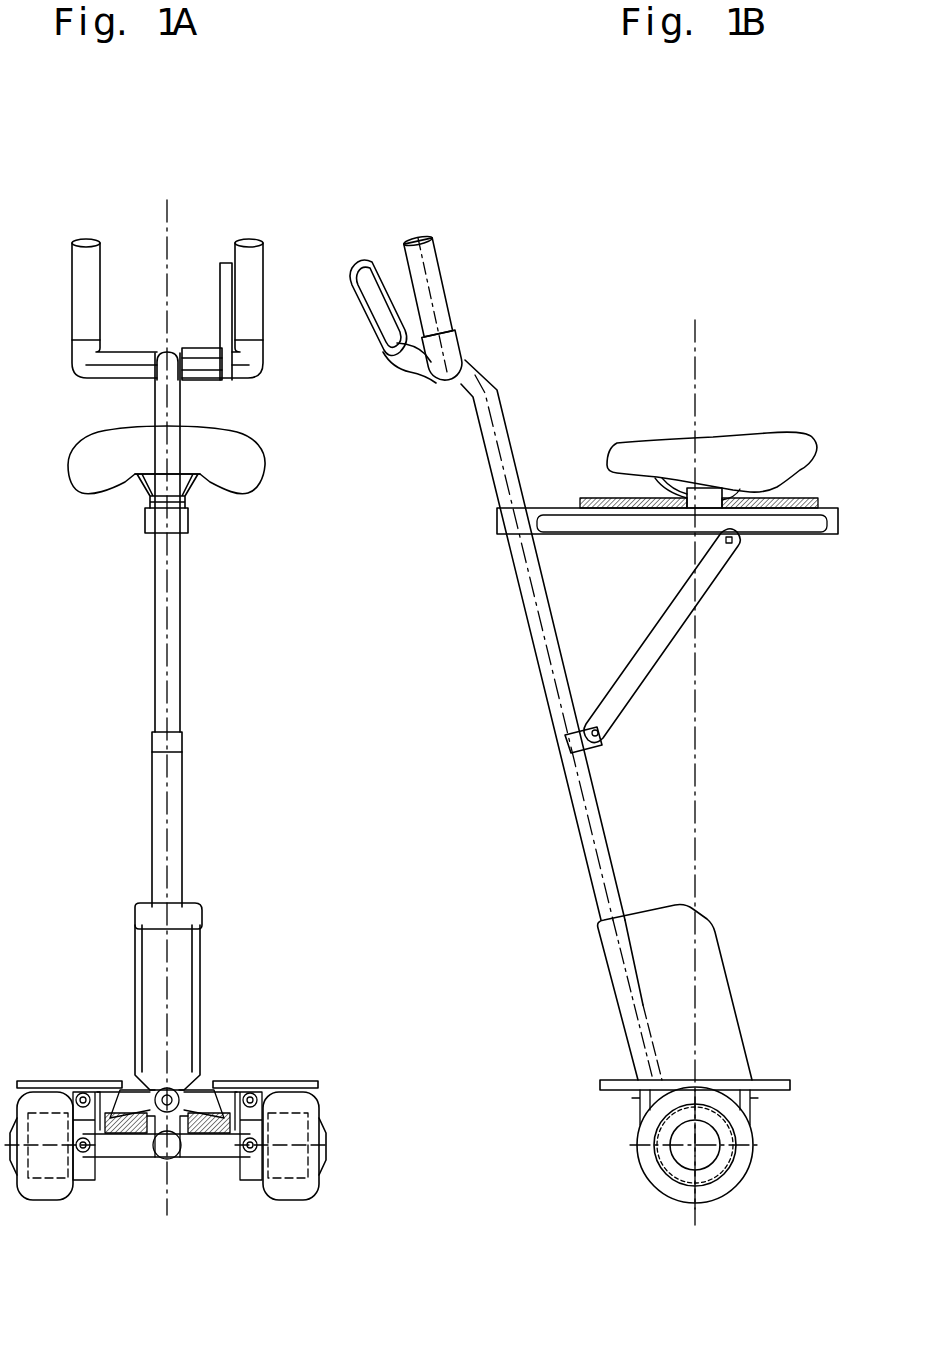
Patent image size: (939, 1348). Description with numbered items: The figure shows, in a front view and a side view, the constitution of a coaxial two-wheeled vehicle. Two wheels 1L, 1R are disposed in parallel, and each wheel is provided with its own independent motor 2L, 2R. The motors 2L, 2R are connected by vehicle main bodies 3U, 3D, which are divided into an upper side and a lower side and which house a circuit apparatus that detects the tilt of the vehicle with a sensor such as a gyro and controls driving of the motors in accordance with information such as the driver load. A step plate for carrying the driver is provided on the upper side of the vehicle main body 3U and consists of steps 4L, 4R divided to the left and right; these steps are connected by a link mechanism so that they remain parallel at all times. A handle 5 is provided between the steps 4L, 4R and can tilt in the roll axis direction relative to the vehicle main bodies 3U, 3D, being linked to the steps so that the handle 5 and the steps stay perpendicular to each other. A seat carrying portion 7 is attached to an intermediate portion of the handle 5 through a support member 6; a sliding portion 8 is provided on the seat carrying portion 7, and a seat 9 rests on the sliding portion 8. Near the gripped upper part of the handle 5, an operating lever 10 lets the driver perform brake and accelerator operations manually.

In FIG. 1A, the wheel 1L is at (300, 1182).
In FIG. 1B, the wheel 1L is at (740, 1168).
In FIG. 1A, the wheel 1R is at (35, 1180).
In FIG. 1A, the motor 2L is at (272, 1170).
In FIG. 1A, the motor 2R is at (47, 1165).
In FIG. 1A, the vehicle main body 3U is at (203, 1095).
In FIG. 1A, the vehicle main body 3D is at (115, 1155).
In FIG. 1A, the step 4L is at (285, 1081).
In FIG. 1B, the step 4L is at (765, 1080).
In FIG. 1A, the step 4R is at (45, 1081).
In FIG. 1A, the handle 5 is at (180, 670).
In FIG. 1B, the handle 5 is at (543, 650).
In FIG. 1B, the support member 6 is at (665, 627).
In FIG. 1B, the seat carrying portion 7 is at (778, 534).
In FIG. 1B, the sliding portion 8 is at (805, 503).
In FIG. 1A, the seat 9 is at (245, 480).
In FIG. 1B, the seat 9 is at (740, 445).
In FIG. 1A, the operating lever 10 is at (222, 300).
In FIG. 1B, the operating lever 10 is at (368, 315).